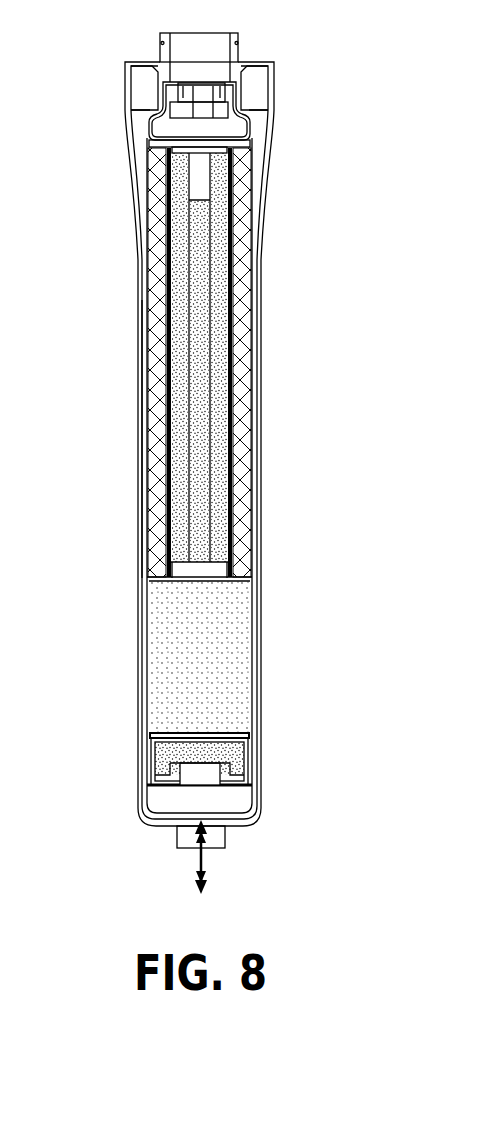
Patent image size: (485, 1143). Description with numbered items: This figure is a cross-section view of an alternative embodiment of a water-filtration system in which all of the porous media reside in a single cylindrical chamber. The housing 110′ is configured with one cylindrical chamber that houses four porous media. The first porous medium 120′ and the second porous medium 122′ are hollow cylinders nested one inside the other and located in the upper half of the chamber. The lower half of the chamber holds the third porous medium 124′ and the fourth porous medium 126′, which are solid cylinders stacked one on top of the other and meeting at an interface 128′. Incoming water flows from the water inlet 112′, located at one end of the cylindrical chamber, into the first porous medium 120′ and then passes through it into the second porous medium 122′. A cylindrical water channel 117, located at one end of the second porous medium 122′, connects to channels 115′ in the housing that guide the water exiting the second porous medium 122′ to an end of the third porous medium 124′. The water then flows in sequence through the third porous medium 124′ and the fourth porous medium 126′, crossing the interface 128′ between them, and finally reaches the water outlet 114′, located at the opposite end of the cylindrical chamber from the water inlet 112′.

The housing 110′ is at (274, 136).
The water inlet 112′ is at (238, 40).
The water outlet 114′ is at (212, 850).
The channels 115′ is at (258, 578).
The cylindrical water channel 117 is at (142, 578).
The first porous medium 120′ is at (225, 311).
The second porous medium 122′ is at (258, 446).
The third porous medium 124′ is at (228, 638).
The fourth porous medium 126′ is at (228, 750).
The interface 128′ is at (262, 731).